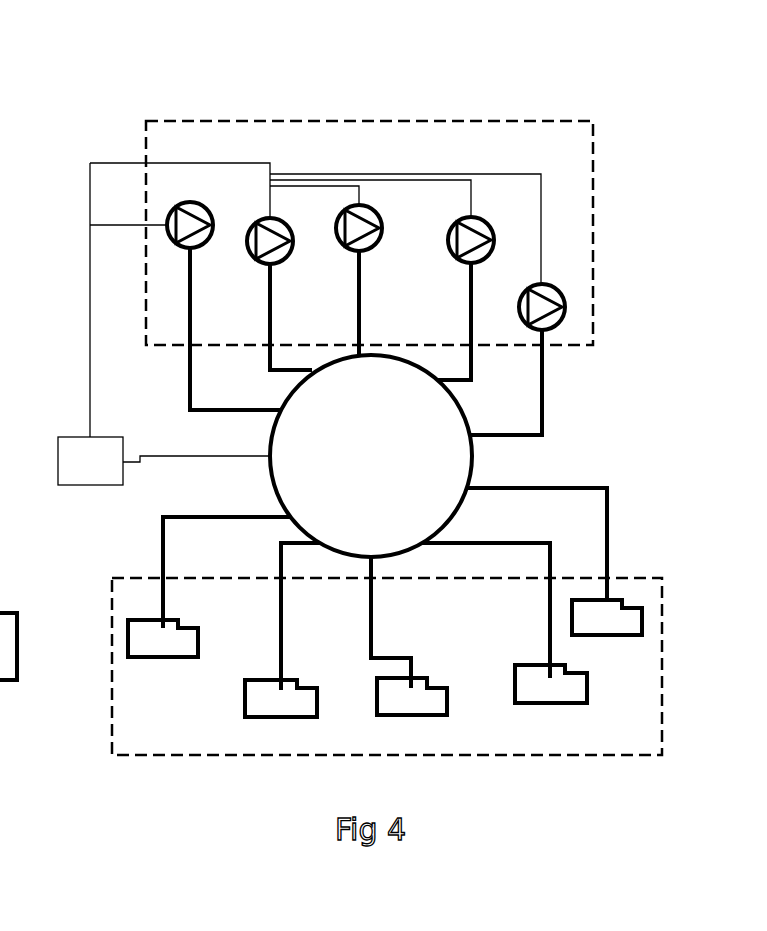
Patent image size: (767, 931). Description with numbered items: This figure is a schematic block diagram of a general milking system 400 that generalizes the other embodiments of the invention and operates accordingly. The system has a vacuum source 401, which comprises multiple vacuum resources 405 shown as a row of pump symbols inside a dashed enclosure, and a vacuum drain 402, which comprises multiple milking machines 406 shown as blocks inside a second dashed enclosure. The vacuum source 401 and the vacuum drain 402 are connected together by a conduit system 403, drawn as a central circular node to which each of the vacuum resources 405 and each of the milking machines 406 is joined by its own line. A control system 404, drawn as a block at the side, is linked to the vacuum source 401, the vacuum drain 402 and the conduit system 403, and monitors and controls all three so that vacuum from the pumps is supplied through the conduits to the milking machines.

The milking system 400 is at (367, 448).
The vacuum source 401 is at (597, 230).
The vacuum drain 402 is at (563, 755).
The conduit system 403 is at (472, 458).
The control system 404 is at (60, 437).
The vacuum resources 405 is at (190, 200).
The milking machines 406 is at (642, 610).